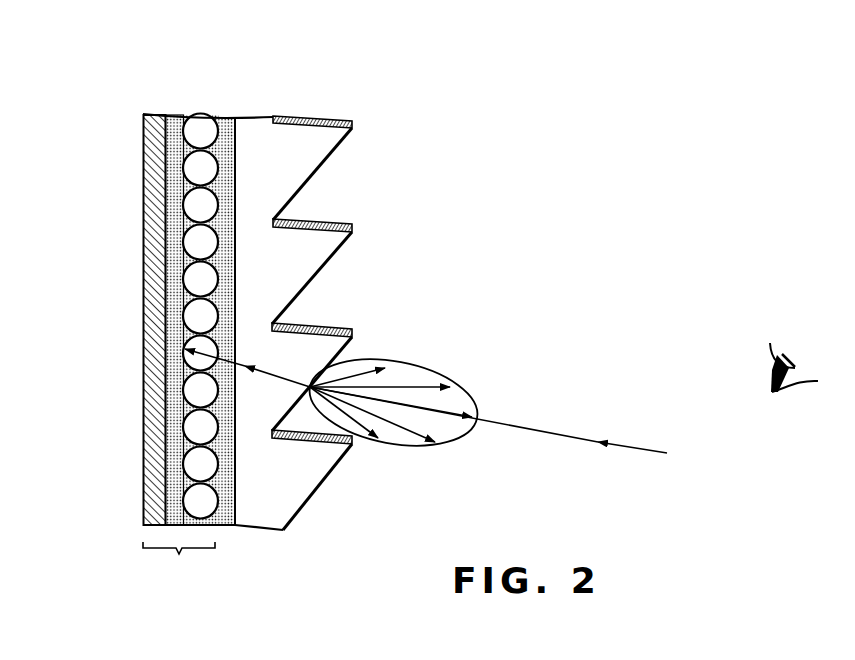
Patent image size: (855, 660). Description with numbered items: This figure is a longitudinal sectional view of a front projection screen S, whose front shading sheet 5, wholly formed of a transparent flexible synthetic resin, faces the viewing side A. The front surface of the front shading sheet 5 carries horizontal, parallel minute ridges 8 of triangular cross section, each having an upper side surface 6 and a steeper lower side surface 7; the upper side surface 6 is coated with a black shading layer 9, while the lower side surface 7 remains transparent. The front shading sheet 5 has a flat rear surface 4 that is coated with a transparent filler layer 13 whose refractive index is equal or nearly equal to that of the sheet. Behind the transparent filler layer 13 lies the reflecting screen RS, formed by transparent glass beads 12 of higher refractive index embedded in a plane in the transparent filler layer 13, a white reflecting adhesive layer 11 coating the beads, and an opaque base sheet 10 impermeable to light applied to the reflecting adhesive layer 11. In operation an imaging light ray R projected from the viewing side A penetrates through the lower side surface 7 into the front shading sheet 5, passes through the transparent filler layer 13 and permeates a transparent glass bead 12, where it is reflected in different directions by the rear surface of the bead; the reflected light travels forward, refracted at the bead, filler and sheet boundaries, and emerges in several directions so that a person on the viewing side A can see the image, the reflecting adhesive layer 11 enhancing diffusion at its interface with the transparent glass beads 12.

The rear surface 4 is at (236, 271).
The front shading sheet 5 is at (303, 296).
The upper side surface 6 is at (343, 152).
The lower side surface 7 is at (310, 180).
The minute ridge 8 is at (315, 243).
The black shading layer 9 is at (323, 118).
The base sheet 10 is at (147, 312).
The reflecting adhesive layer 11 is at (147, 228).
The transparent glass beads 12 is at (147, 177).
The transparent filler layer 13 is at (218, 138).
The reflecting screen RS is at (179, 566).
The imaging light ray R is at (527, 425).
The front projection screen S is at (415, 168).
The viewing side A is at (661, 247).